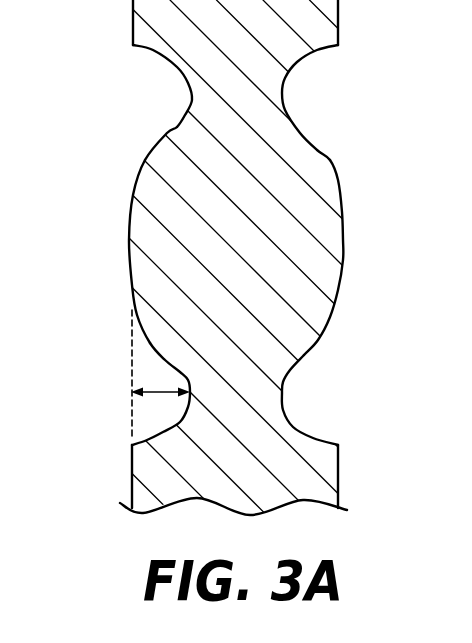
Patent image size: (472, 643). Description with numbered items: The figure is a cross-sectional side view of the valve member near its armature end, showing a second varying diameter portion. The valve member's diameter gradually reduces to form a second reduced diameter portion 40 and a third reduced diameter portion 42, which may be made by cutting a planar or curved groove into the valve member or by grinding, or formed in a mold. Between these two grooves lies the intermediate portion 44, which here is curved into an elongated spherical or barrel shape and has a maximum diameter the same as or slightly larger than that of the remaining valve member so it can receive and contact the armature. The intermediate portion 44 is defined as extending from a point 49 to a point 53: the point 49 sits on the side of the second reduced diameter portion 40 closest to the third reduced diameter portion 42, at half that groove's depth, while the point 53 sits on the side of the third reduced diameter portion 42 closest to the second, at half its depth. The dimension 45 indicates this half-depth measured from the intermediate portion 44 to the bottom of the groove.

The second reduced diameter portion 40 is at (284, 395).
The third reduced diameter portion 42 is at (191, 94).
The intermediate portion 44 is at (324, 209).
The neck depth dimension 45 is at (163, 391).
The point 49 is at (153, 352).
The point 53 is at (166, 133).